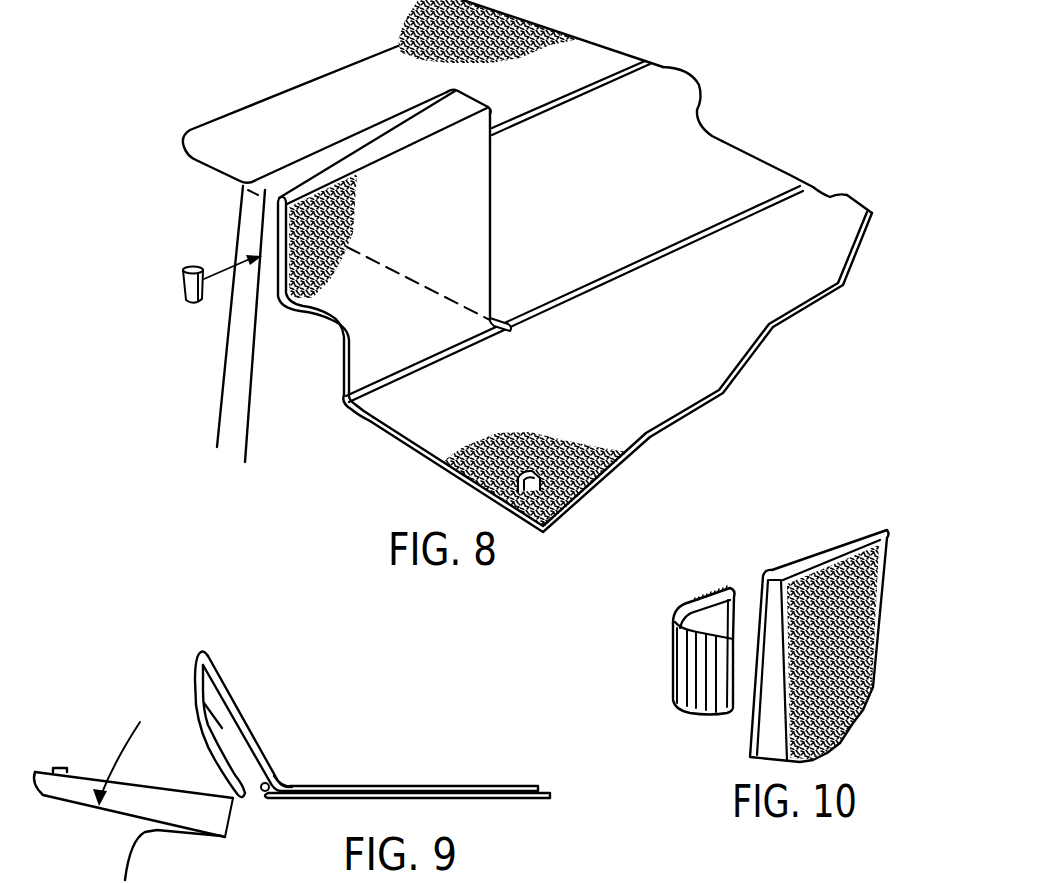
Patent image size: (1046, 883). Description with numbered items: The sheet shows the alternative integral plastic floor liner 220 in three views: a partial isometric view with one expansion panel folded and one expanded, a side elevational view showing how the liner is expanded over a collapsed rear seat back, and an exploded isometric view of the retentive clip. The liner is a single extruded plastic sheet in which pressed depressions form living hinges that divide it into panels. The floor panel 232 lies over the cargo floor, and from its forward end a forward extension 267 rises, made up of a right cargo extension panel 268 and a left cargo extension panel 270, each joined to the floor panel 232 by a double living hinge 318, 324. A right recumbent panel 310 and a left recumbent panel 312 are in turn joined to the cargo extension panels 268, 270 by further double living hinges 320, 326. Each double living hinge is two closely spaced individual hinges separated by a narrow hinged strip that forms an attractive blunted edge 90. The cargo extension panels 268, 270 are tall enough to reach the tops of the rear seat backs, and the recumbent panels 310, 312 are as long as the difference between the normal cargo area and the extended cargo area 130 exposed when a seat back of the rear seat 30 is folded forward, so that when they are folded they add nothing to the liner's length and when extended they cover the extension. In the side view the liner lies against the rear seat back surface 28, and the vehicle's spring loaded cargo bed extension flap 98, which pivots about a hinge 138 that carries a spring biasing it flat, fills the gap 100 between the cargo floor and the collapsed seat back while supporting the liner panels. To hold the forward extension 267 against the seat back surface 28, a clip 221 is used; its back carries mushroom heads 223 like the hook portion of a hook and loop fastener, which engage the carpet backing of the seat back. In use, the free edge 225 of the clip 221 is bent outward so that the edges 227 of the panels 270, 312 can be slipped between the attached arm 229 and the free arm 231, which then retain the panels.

In FIG. 8, the rear seat back surface 28 is at (263, 430).
In FIG. 9, the rear seat back surface 28 is at (82, 770).
In FIG. 8, the rear seat 30 is at (227, 390).
In FIG. 9, the rear seat 30 is at (47, 795).
In FIG. 10, the blunted edge 90 is at (820, 547).
In FIG. 9, the spring loaded cargo bed extension flap 98 is at (218, 727).
In FIG. 9, the gap 100 is at (248, 795).
In FIG. 8, the extended cargo area 130 is at (577, 55).
In FIG. 9, the hinge 138 is at (265, 797).
In FIG. 8, the floor liner 220 is at (743, 108).
In FIG. 9, the floor liner 220 is at (340, 723).
In FIG. 8, the clip 221 is at (183, 283).
In FIG. 10, the clip 221 is at (672, 733).
In FIG. 10, the mushroom heads 223 is at (705, 590).
In FIG. 10, the free edge 225 is at (732, 713).
In FIG. 10, the edges 227 is at (760, 700).
In FIG. 10, the attached arm 229 is at (675, 618).
In FIG. 10, the free arm 231 is at (700, 707).
In FIG. 8, the floor panel 232 is at (643, 375).
In FIG. 9, the floor panel 232 is at (412, 785).
In FIG. 8, the forward extension 267 is at (605, 58).
In FIG. 8, the right cargo extension panel 268 is at (607, 190).
In FIG. 8, the left cargo extension panel 270 is at (443, 225).
In FIG. 9, the left cargo extension panel 270 is at (222, 685).
In FIG. 8, the right recumbent panel 310 is at (357, 105).
In FIG. 8, the left recumbent panel 312 is at (313, 360).
In FIG. 9, the left recumbent panel 312 is at (188, 698).
In FIG. 8, the double living hinge 318 is at (697, 233).
In FIG. 8, the double living hinge 320 is at (560, 100).
In FIG. 8, the double living hinge 324 is at (433, 358).
In FIG. 9, the double living hinge 324 is at (283, 783).
In FIG. 8, the double living hinge 326 is at (490, 100).
In FIG. 9, the double living hinge 326 is at (202, 650).